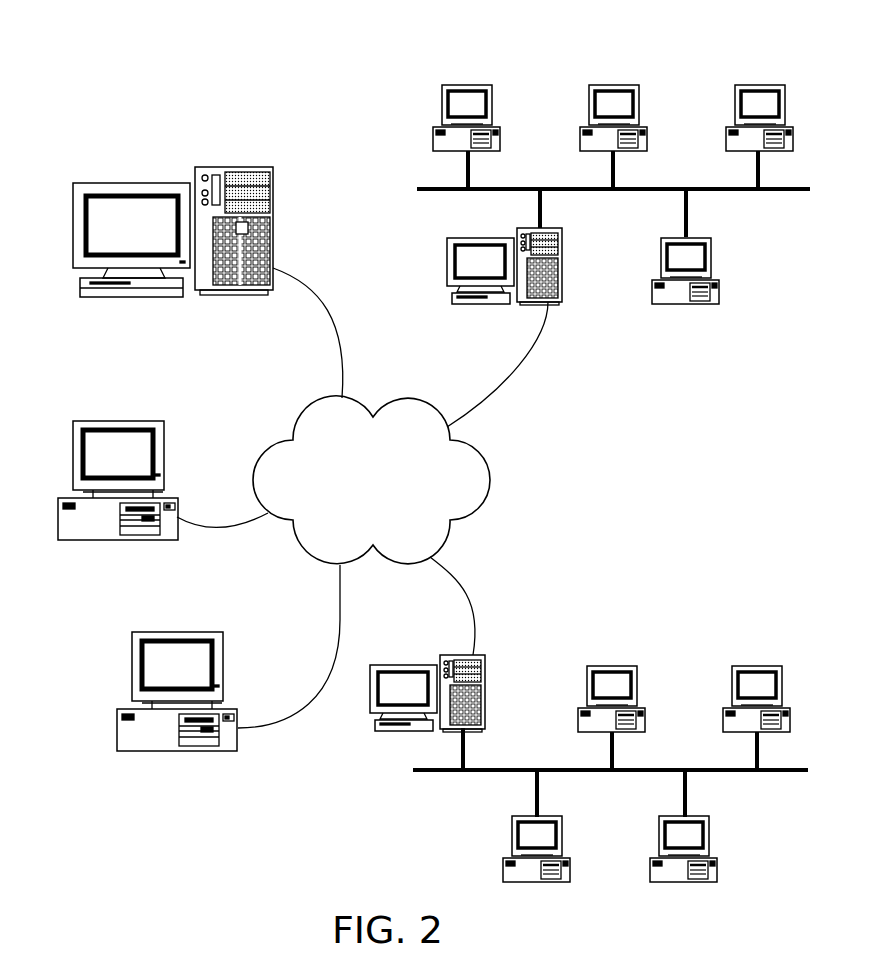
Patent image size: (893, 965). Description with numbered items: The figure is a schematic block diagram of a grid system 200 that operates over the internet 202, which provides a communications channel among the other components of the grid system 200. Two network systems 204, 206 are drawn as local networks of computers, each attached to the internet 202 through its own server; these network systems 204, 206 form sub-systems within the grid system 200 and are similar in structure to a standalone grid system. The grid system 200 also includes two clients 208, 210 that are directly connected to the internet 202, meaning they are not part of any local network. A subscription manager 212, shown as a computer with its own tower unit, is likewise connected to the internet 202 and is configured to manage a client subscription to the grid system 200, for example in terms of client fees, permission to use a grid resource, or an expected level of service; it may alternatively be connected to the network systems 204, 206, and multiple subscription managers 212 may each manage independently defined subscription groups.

The grid system 200 is at (104, 91).
The internet 202 is at (371, 480).
The network system 204 is at (697, 322).
The network system 206 is at (695, 653).
The client 208 is at (132, 657).
The client 210 is at (73, 443).
The subscription manager 212 is at (211, 167).